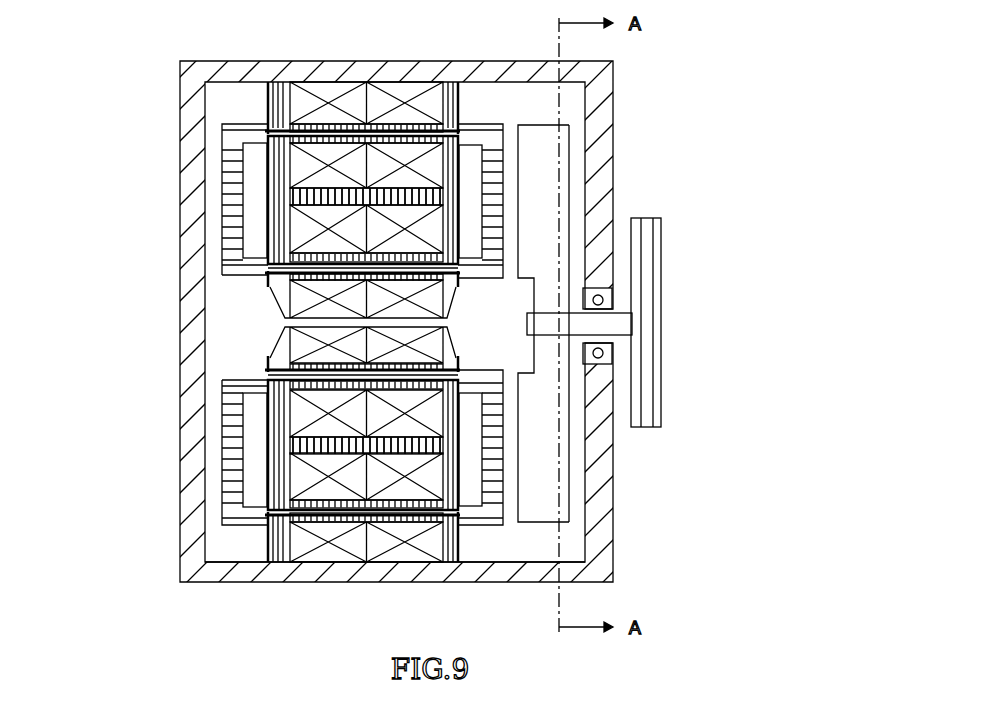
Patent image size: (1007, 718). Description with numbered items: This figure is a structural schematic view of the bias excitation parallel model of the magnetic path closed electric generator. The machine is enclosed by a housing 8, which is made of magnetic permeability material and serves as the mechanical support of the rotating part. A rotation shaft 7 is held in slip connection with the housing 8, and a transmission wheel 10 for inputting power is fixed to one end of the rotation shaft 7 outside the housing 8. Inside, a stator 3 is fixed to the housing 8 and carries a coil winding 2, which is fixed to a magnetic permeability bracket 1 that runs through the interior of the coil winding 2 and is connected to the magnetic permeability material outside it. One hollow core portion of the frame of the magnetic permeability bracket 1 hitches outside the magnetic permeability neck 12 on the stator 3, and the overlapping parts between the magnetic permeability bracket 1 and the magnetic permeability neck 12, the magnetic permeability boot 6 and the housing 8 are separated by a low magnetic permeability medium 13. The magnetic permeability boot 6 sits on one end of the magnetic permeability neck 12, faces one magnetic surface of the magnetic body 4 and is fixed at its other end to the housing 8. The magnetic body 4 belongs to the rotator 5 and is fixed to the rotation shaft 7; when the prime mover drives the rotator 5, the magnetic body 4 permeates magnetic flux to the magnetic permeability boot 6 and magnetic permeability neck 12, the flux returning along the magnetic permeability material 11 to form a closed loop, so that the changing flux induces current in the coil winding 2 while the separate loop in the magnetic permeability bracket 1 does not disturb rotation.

The magnetic permeability bracket 1 is at (278, 497).
The coil winding 2 is at (303, 542).
The stator 3 is at (350, 563).
The magnetic body 4 is at (550, 510).
The rotator 5 is at (568, 435).
The magnetic permeability boot 6 is at (493, 483).
The rotation shaft 7 is at (613, 325).
The housing 8 is at (403, 582).
The transmission wheel 10 is at (648, 368).
The magnetic permeability material 11 is at (237, 380).
The magnetic permeability neck 12 is at (333, 268).
The low magnetic permeability medium 13 is at (267, 175).